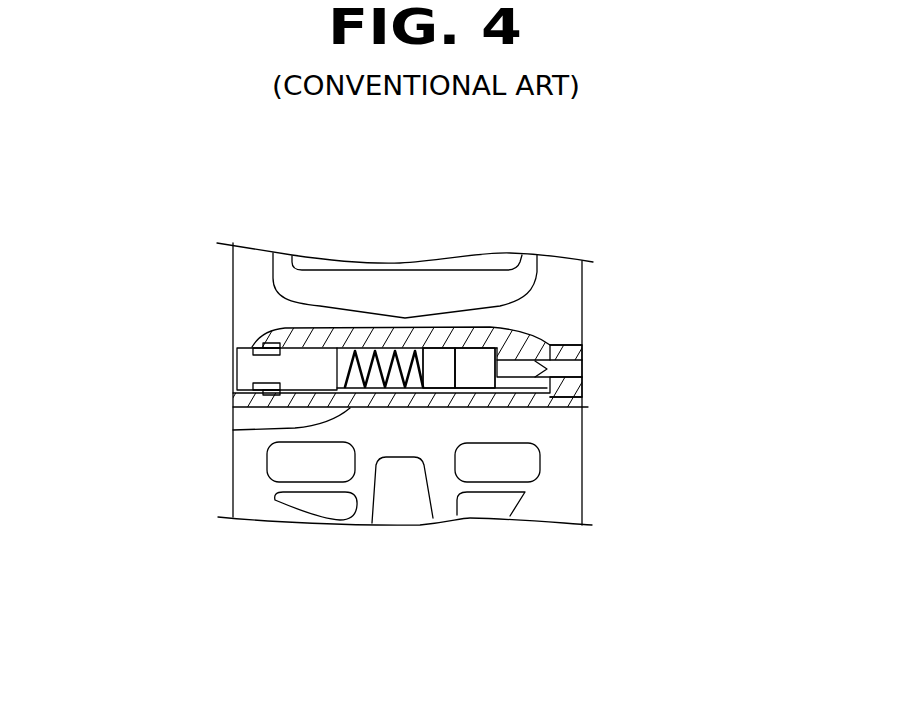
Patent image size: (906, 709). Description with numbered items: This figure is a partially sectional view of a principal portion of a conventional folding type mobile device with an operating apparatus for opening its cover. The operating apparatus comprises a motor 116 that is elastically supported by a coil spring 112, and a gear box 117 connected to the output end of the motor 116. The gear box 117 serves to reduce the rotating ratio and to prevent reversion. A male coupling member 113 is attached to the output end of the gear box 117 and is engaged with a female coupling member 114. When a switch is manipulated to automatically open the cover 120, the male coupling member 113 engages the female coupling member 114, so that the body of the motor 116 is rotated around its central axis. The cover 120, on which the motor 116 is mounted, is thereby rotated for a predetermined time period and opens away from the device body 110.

The device body 110 is at (566, 492).
The coil spring 112 is at (233, 430).
The male coupling member 113 is at (517, 367).
The female coupling member 114 is at (579, 369).
The motor 116 is at (441, 365).
The gear box 117 is at (474, 377).
The cover 120 is at (240, 287).